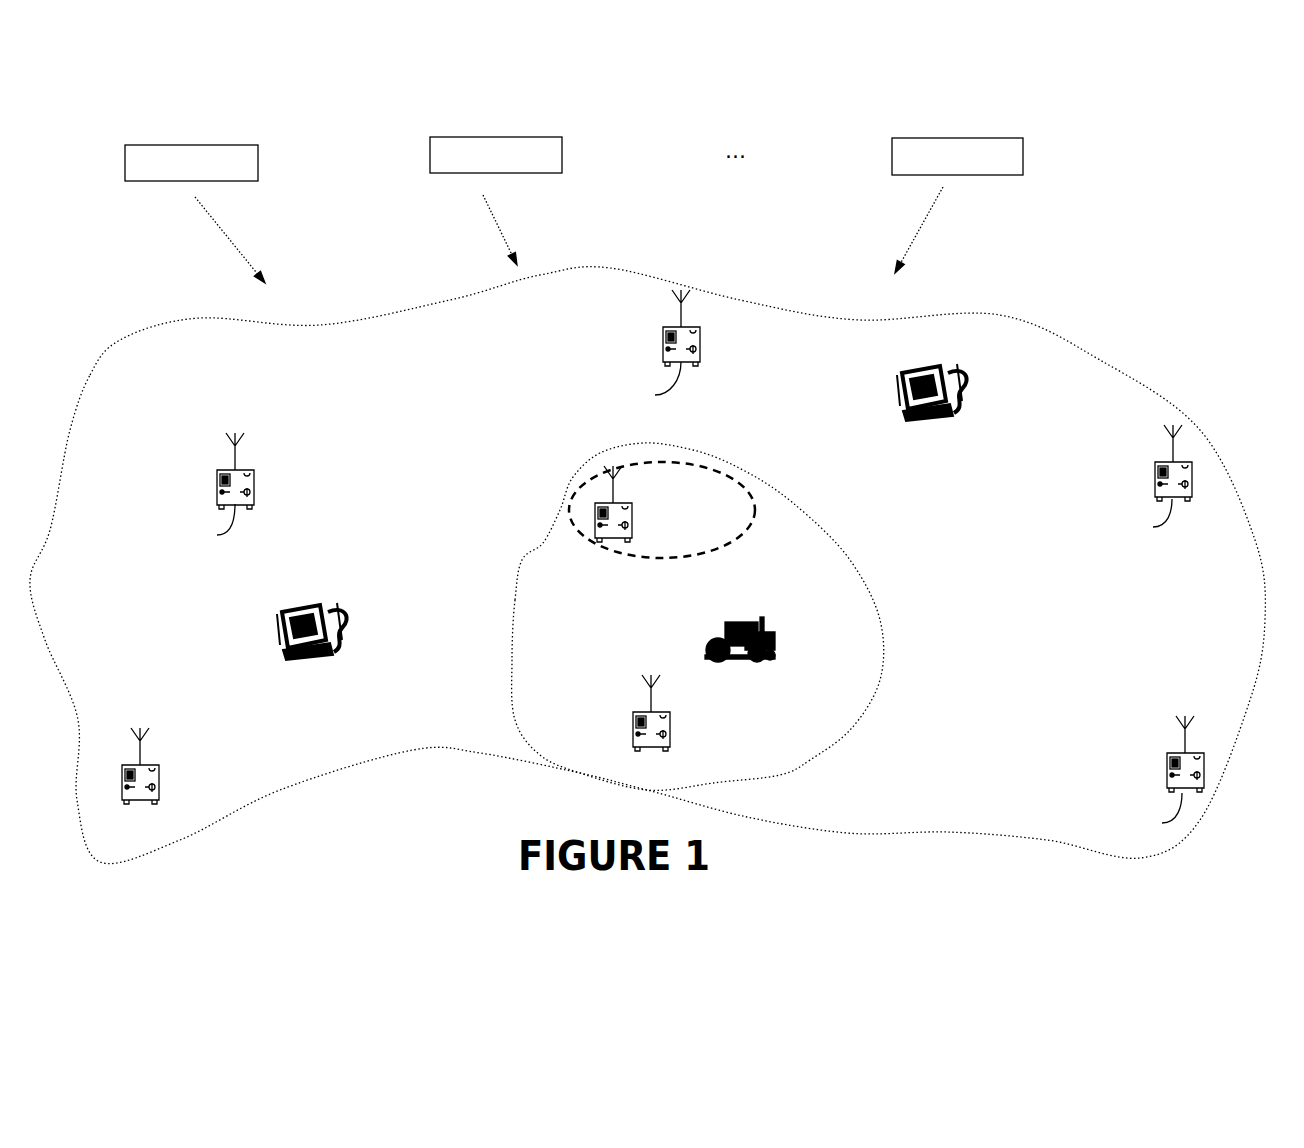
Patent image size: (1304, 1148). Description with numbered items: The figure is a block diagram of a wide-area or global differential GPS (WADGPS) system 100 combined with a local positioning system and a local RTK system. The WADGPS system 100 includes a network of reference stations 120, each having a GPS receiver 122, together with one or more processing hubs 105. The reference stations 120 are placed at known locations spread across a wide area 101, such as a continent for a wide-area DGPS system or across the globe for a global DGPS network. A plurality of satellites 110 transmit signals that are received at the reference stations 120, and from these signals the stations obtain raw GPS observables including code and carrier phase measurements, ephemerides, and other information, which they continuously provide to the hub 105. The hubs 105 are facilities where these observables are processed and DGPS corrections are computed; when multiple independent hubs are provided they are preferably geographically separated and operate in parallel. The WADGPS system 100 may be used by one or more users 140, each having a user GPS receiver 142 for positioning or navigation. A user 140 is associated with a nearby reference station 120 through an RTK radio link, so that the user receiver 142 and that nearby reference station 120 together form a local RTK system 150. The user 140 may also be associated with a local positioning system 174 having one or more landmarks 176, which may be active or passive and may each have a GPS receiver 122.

The WADGPS system 100 is at (1180, 190).
The wide area 101 is at (471, 504).
The processing hub 105 is at (305, 603).
The satellite 110 is at (945, 120).
The reference station 120 is at (215, 478).
The GPS receiver 122 is at (217, 535).
The user 140 is at (726, 620).
The user GPS receiver 142 is at (777, 630).
The local RTK system 150 is at (880, 562).
The local positioning system 174 is at (748, 500).
The landmark 176 is at (588, 537).